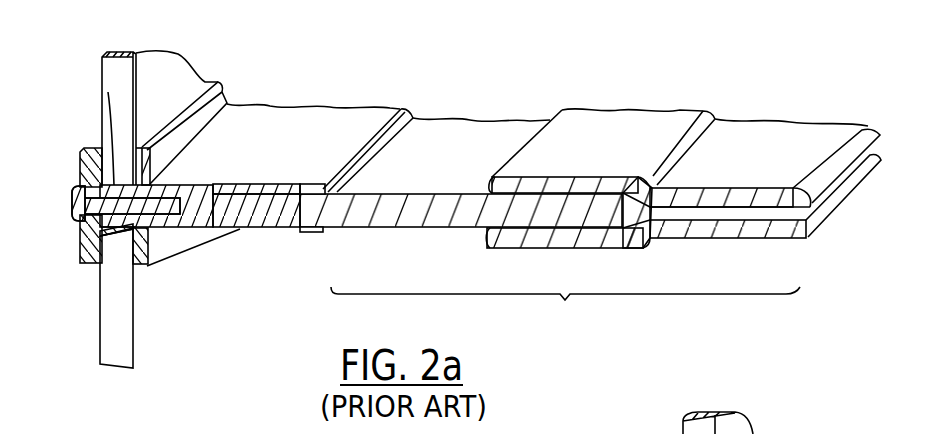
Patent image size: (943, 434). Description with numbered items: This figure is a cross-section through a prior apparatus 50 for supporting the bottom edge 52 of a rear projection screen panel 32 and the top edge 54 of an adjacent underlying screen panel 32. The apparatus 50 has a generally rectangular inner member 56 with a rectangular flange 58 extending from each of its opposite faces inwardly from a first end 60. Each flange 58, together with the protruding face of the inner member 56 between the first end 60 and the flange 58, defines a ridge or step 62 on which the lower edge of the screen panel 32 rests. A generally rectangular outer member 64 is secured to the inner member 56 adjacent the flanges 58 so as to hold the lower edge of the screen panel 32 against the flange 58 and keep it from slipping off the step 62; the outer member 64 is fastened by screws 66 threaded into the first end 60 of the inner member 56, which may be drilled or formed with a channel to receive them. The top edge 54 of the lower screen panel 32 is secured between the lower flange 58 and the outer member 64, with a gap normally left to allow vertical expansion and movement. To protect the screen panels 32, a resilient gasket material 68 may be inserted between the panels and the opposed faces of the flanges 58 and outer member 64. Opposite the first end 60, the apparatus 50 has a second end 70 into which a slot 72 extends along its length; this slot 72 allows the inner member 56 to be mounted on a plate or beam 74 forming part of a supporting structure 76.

The screen panel 32 is at (158, 70).
The prior apparatus 50 is at (265, 66).
The bottom edge 52 is at (102, 131).
The top edge 54 is at (126, 240).
The inner member 56 is at (325, 125).
The rectangular flange 58 is at (221, 97).
The first end 60 is at (130, 220).
The step 62 is at (122, 150).
The outer member 64 is at (80, 163).
The screws 66 is at (72, 205).
The resilient gasket material 68 is at (97, 265).
The second end 70 is at (407, 110).
The slot 72 is at (328, 208).
The plate or beam 74 is at (488, 135).
The supporting structure 76 is at (565, 309).